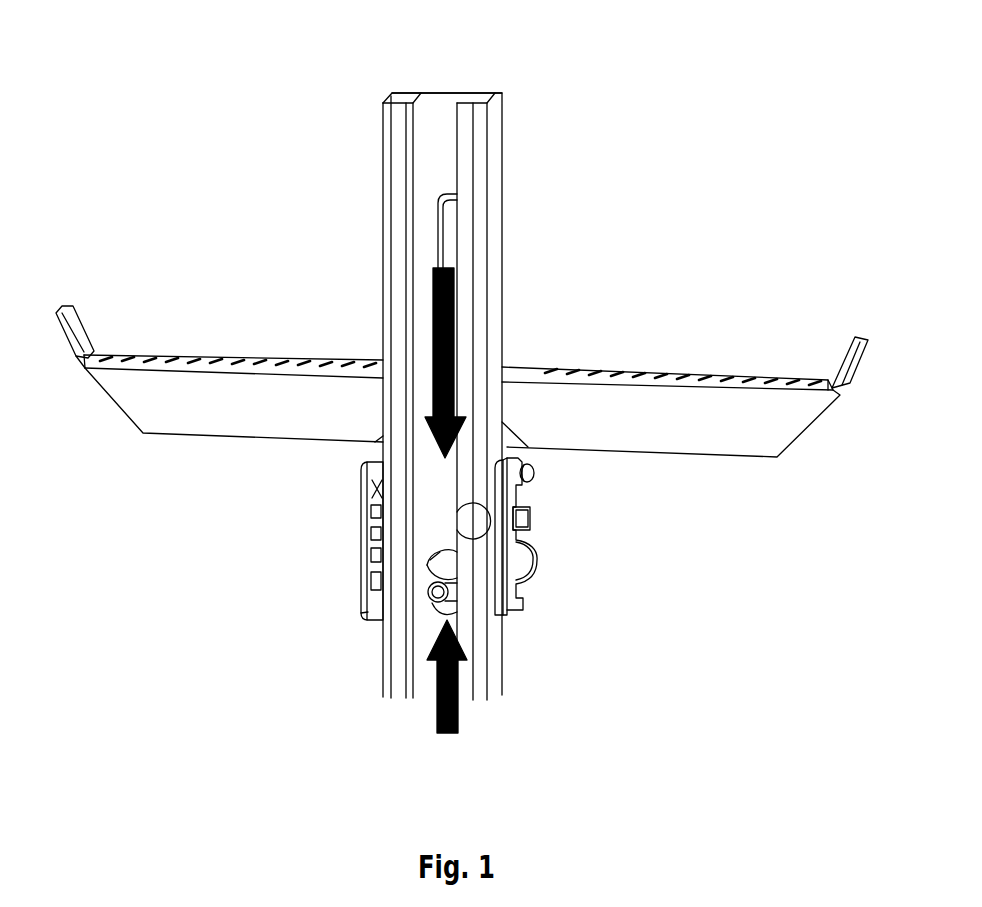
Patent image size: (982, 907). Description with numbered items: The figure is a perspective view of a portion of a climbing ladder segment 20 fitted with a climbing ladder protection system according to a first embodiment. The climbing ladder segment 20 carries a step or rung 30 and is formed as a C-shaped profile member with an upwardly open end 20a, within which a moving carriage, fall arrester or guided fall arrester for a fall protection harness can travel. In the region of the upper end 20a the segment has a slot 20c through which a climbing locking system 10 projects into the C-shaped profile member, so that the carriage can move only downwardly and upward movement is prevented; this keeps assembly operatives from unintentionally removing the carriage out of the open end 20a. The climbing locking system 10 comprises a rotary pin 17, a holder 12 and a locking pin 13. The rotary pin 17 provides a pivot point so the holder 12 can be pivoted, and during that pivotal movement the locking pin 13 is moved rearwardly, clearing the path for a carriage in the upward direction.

The climbing locking system 10 is at (517, 600).
The holder 12 is at (517, 578).
The locking pin 13 is at (428, 596).
The rotary pin 17 is at (535, 478).
The climbing ladder segment 20 is at (496, 157).
The upwardly open end 20a is at (450, 97).
The slot 20c is at (440, 565).
The rung 30 is at (788, 315).